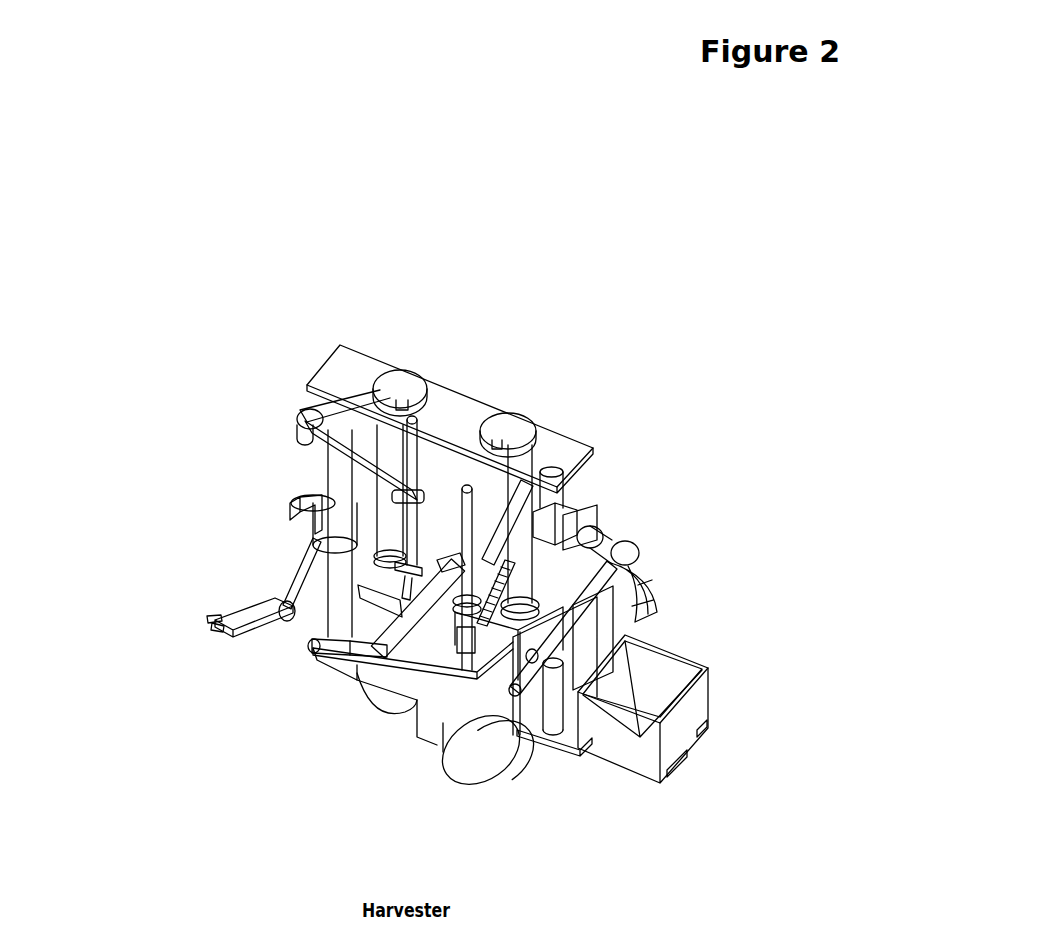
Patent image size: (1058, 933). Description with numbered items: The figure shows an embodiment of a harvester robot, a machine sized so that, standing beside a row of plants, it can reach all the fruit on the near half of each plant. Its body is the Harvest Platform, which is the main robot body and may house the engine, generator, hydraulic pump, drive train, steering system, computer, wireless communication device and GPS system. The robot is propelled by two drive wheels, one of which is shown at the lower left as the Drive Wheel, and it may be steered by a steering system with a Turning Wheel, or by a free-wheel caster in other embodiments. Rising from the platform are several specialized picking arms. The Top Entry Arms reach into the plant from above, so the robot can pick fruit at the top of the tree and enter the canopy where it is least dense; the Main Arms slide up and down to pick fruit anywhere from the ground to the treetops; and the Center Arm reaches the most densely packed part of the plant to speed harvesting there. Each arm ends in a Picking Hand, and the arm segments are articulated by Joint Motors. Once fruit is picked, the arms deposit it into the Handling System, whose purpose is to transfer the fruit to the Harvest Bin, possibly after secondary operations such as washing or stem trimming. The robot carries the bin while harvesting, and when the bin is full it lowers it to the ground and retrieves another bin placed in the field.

The top entry arms Top Entry Arms is at (502, 532).
The joint motors Joint Motors is at (295, 510).
The main arms Main Arms is at (573, 594).
The picking hand Picking Hand is at (217, 618).
The center arm Center Arm is at (400, 623).
The handling system Handling System is at (485, 662).
The harvest platform Harvest Platform is at (443, 683).
The turning wheel Turning Wheel is at (375, 690).
The drive wheel Drive Wheel is at (475, 742).
The harvest bin Harvest Bin is at (673, 675).